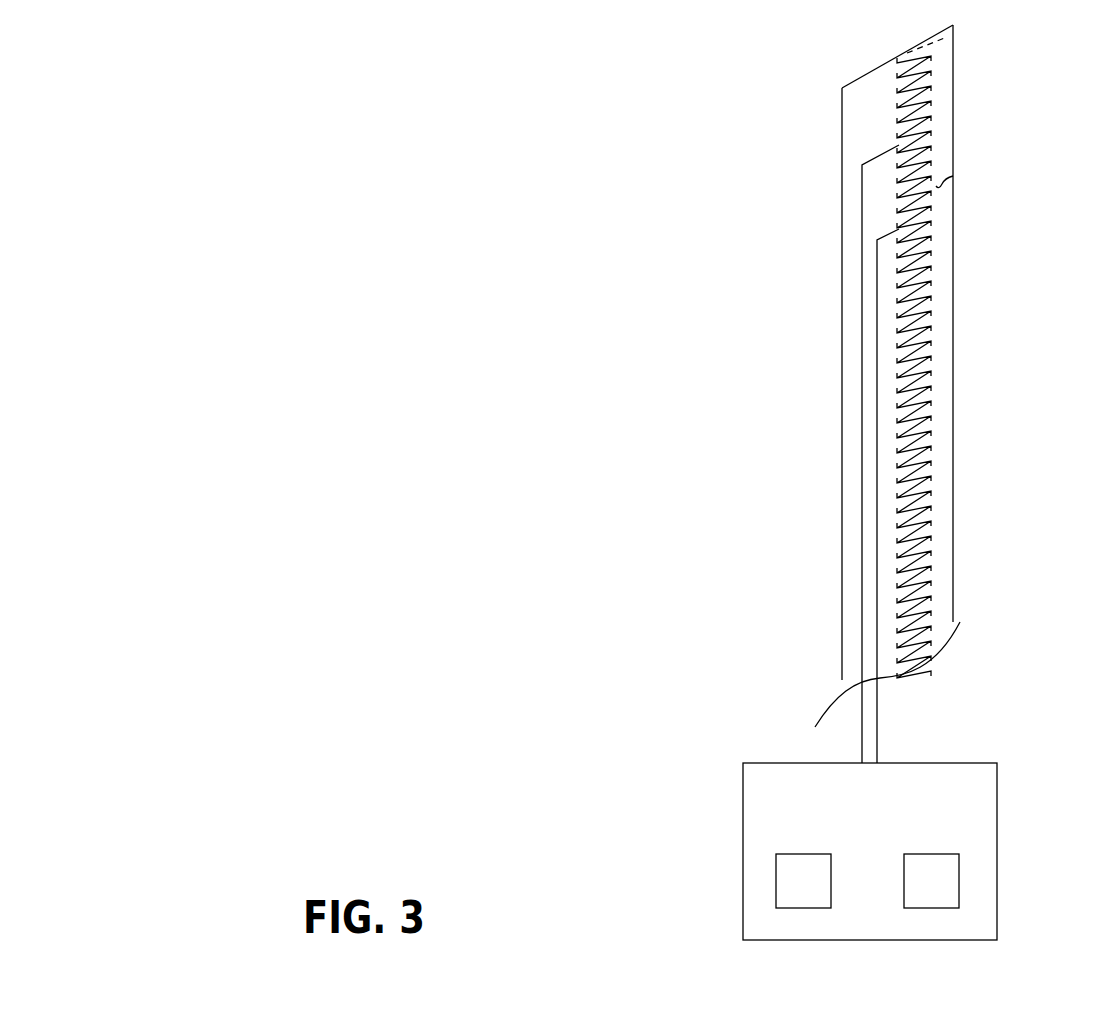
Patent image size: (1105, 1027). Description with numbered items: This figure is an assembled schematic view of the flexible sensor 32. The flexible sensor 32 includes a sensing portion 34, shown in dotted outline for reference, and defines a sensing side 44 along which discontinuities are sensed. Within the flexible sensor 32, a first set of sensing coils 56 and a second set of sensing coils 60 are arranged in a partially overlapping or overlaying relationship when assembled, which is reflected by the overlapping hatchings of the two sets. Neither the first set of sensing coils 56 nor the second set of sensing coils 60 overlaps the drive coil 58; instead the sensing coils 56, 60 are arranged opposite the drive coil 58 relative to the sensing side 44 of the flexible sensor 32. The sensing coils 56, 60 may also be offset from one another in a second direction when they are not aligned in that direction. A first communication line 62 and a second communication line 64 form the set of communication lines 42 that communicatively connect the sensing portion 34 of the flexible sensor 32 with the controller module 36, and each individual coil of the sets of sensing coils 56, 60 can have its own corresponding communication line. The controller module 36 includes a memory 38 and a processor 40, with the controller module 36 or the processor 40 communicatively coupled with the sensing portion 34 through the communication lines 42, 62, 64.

The flexible sensor 32 is at (908, 43).
The sensing portion 34 is at (837, 134).
The controller module 36 is at (856, 893).
The memory 38 is at (791, 893).
The processor 40 is at (919, 893).
The set of communication lines 42 is at (826, 491).
The sensing side 44 is at (958, 327).
The first set of sensing coils 56 is at (1001, 367).
The drive coil 58 is at (953, 176).
The second set of sensing coils 60 is at (913, 470).
The first communication line 62 is at (862, 215).
The second communication line 64 is at (877, 335).